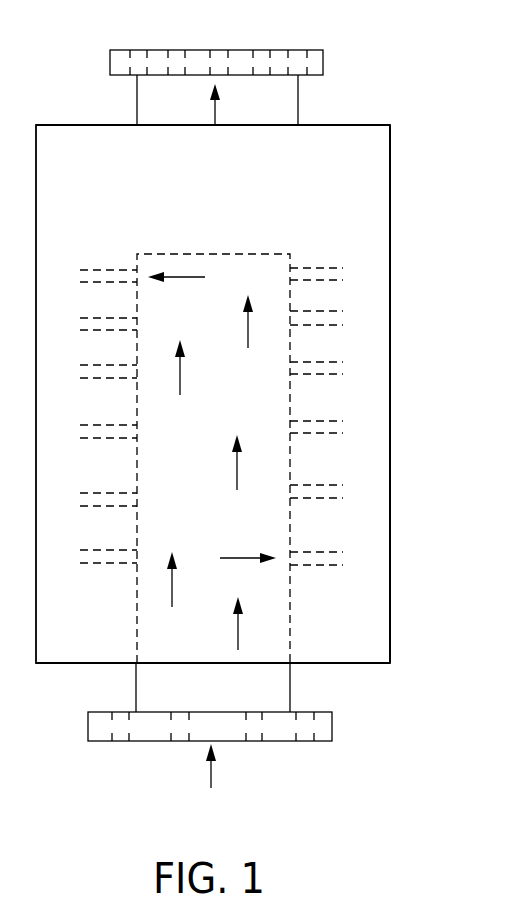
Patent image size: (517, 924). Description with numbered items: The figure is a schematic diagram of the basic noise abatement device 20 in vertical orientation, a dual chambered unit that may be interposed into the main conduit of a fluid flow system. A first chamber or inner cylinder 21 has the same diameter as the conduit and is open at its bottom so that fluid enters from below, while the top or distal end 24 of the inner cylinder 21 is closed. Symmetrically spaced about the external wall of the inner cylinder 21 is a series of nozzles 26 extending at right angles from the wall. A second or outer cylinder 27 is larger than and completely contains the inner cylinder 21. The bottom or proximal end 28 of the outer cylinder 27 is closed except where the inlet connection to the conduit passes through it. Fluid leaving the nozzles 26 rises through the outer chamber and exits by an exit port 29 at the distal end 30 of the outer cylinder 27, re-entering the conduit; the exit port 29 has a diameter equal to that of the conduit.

The noise abatement device 20 is at (403, 266).
The inner cylinder 21 is at (188, 516).
The distal end of the inner cylinder 24 is at (238, 254).
The nozzles 26 is at (323, 433).
The outer cylinder 27 is at (390, 581).
The proximal end of the outer cylinder 28 is at (45, 664).
The exit port 29 is at (180, 125).
The distal end of the outer cylinder 30 is at (72, 125).